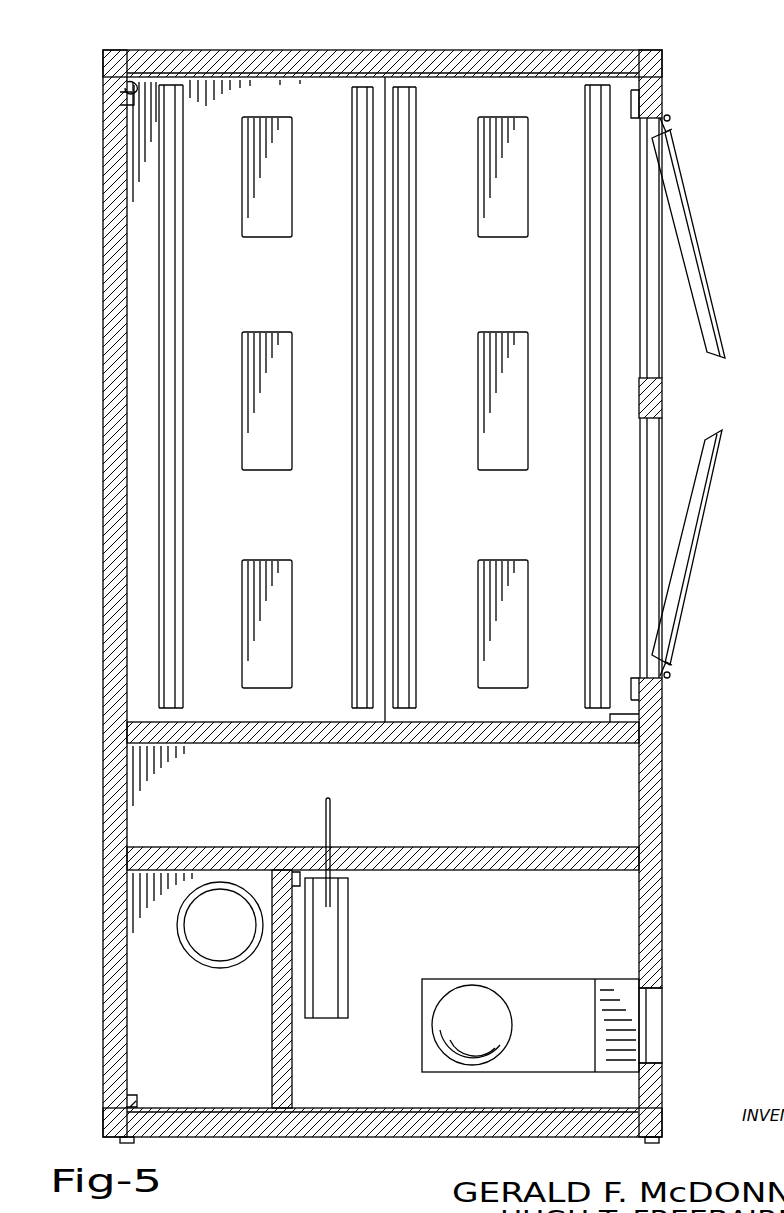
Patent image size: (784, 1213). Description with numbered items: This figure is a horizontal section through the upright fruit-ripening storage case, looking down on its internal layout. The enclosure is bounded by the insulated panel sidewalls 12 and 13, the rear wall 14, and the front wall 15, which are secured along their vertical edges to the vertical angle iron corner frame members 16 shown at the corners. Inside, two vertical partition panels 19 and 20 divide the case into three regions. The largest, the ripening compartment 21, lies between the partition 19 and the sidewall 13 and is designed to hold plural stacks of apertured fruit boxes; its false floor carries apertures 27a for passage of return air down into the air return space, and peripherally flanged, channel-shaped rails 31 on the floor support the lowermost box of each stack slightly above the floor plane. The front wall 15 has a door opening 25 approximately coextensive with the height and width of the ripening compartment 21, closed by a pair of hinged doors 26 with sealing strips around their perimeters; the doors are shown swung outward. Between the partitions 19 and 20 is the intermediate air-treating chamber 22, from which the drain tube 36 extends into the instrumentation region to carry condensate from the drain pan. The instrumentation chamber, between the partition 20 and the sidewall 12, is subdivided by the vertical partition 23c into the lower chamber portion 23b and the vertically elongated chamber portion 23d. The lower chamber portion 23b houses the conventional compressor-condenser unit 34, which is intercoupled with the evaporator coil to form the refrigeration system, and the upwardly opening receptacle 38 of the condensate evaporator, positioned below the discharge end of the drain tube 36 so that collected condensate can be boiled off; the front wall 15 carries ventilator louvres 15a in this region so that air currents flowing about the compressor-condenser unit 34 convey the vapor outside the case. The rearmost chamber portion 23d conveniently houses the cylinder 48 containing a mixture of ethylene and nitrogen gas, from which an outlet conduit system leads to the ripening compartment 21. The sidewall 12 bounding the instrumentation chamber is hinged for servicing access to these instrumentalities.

The sidewall 12 is at (418, 1135).
The sidewall 13 is at (420, 49).
The rear wall 14 is at (105, 382).
The front wall 15 is at (664, 880).
The ventilator louvres 15a is at (665, 1032).
The vertical angle iron corner frame members 16 is at (124, 98).
The vertical partition panel 19 is at (515, 743).
The vertical partition panel 20 is at (512, 870).
The ripening compartment 21 is at (456, 388).
The air-treating chamber 22 is at (456, 802).
The lower chamber portion 23b is at (514, 948).
The vertical partition 23c is at (272, 1021).
The vertically elongated chamber portion 23d is at (243, 1058).
The door opening 25 is at (644, 243).
The hinged doors 26 is at (722, 449).
The apertures 27a is at (276, 237).
The channel-shaped rails 31 is at (360, 297).
The compressor-condenser unit 34 is at (428, 1044).
The drain tube 36 is at (333, 818).
The receptacle 38 is at (350, 945).
The cylinder 48 is at (218, 965).